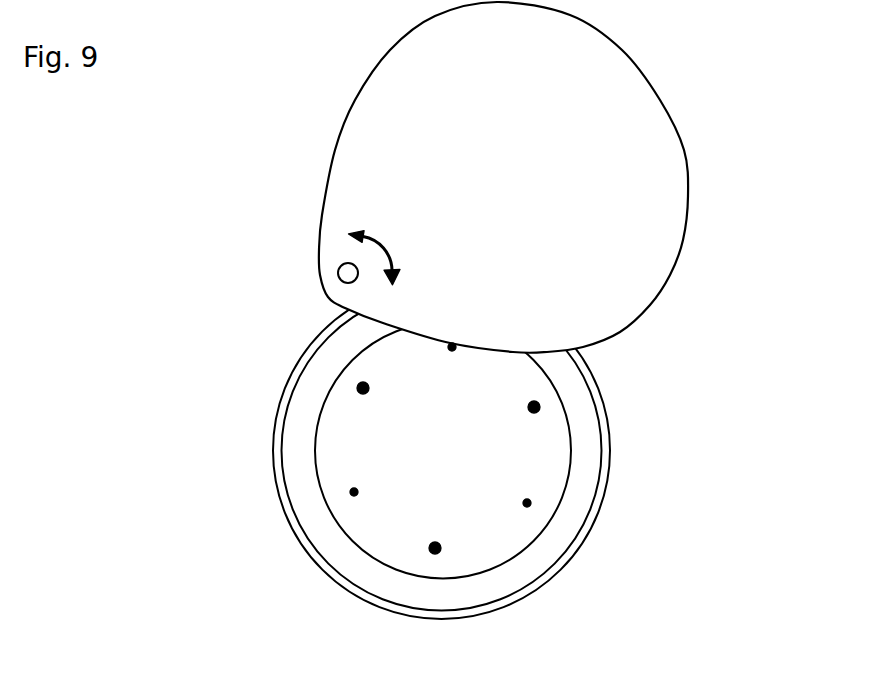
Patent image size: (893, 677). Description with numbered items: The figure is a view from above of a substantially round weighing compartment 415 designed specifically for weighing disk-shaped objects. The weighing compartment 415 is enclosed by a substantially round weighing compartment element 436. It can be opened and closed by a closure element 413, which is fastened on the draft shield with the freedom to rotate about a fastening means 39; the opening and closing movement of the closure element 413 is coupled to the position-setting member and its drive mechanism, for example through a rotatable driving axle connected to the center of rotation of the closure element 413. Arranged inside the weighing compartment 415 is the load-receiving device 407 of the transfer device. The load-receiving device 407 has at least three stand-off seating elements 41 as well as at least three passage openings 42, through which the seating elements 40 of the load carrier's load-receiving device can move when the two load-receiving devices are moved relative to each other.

The closure element 413 is at (472, 148).
The fastening means 39 is at (348, 273).
The passage openings 42 is at (363, 388).
The seating elements 40 is at (534, 407).
The stand-off seating elements 41 is at (527, 503).
The load-receiving device 407 is at (502, 456).
The weighing compartment 415 is at (310, 492).
The weighing compartment element 436 is at (553, 577).